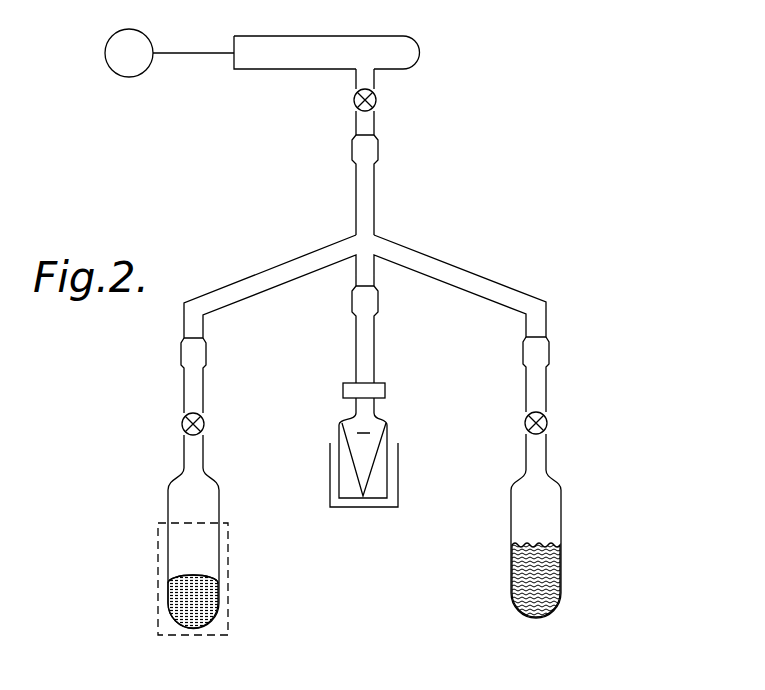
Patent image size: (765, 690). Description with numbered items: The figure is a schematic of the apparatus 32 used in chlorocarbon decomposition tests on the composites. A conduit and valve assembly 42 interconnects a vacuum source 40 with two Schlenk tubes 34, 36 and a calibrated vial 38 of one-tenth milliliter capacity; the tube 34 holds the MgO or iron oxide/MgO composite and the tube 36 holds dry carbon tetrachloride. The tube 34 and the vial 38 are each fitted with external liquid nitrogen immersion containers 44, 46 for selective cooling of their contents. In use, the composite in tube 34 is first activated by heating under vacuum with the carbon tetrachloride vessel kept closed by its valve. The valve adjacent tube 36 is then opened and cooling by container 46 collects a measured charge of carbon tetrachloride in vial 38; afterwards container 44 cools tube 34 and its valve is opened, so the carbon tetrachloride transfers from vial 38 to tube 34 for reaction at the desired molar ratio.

The apparatus 32 is at (627, 154).
The Schlenk tube 34 is at (208, 502).
The Schlenk tube 36 is at (553, 517).
The calibrated vial 38 is at (387, 435).
The vacuum source 40 is at (133, 33).
The conduit and valve assembly 42 is at (388, 175).
The external liquid nitrogen immersion container 44 is at (228, 585).
The external liquid nitrogen immersion container 46 is at (343, 502).